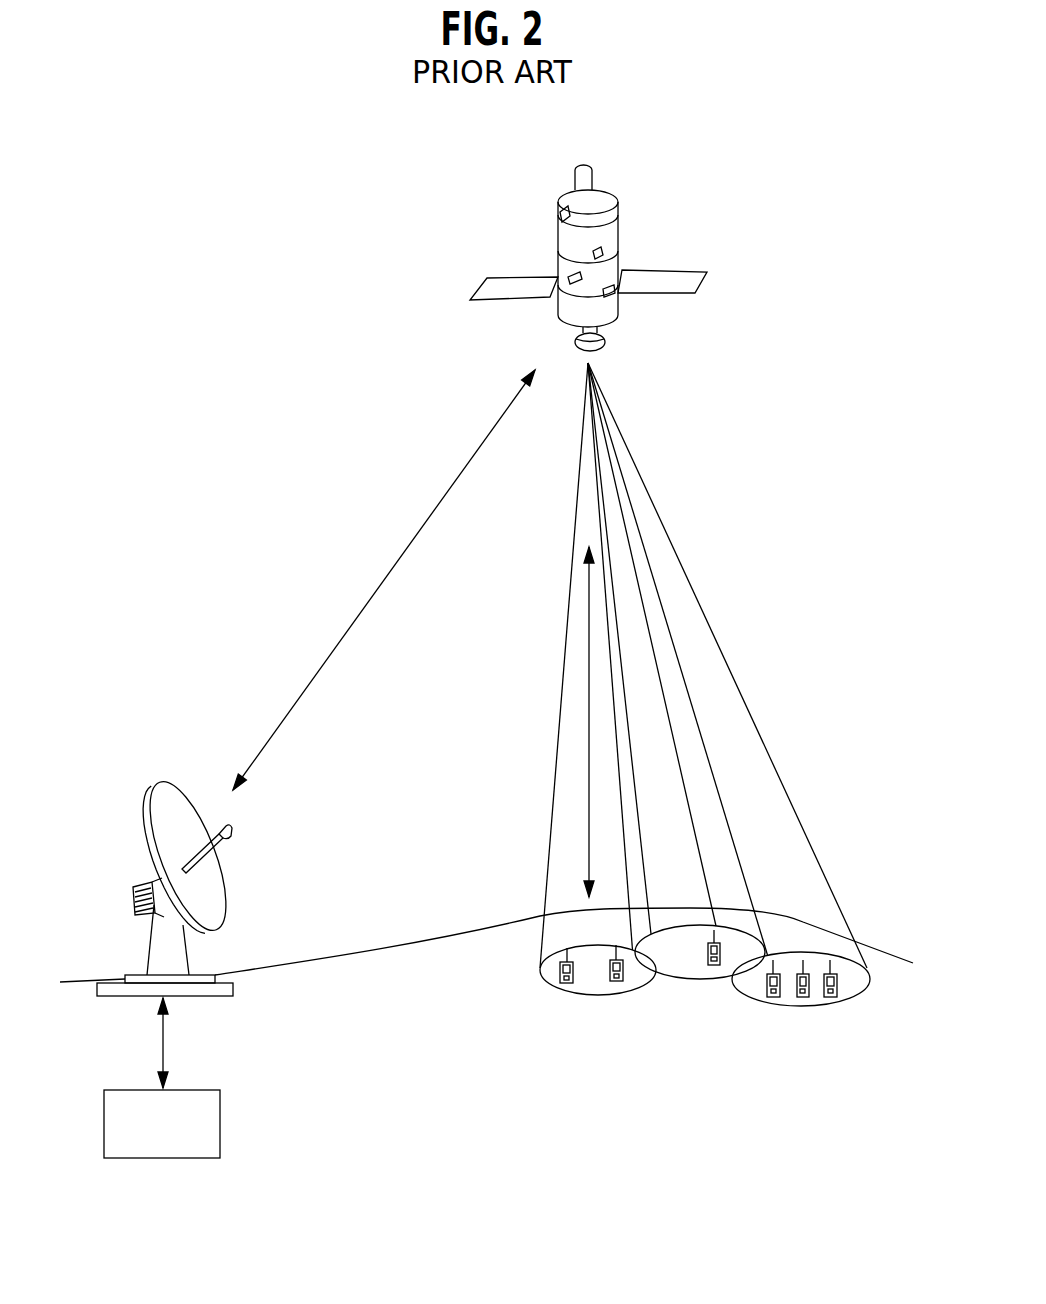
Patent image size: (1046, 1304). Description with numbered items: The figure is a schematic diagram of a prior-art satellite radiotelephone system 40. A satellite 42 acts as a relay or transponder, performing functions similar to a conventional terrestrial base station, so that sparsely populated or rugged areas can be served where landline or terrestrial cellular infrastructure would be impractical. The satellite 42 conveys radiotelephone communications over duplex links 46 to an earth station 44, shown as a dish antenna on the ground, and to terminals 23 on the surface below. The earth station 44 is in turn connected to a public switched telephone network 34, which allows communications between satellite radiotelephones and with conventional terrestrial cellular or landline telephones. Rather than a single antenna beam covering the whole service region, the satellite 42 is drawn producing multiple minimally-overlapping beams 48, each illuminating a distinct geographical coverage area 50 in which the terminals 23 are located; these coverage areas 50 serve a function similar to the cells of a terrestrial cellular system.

The satellite radiotelephone system 40 is at (310, 367).
The satellite 42 is at (637, 257).
The earth station 44 is at (128, 998).
The duplex links 46 is at (403, 545).
The beams 48 is at (547, 862).
The coverage areas 50 is at (545, 982).
The terminals 23 is at (570, 983).
The public switched telephone network 34 is at (223, 1097).